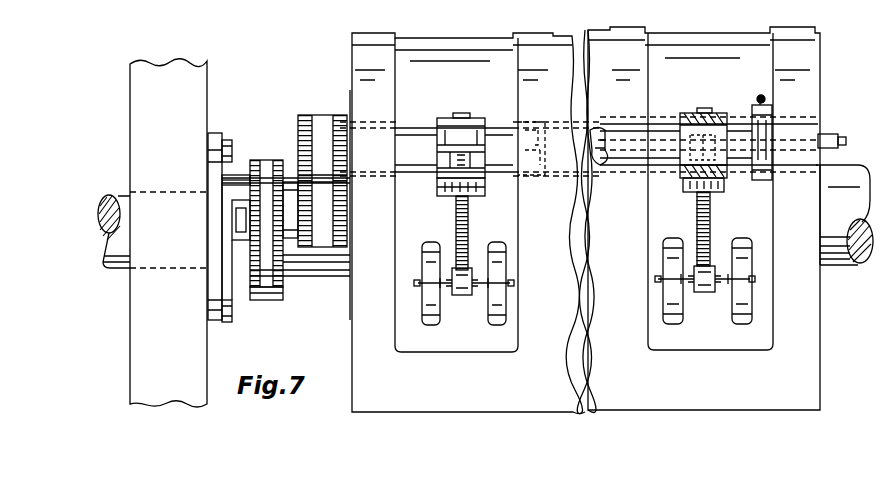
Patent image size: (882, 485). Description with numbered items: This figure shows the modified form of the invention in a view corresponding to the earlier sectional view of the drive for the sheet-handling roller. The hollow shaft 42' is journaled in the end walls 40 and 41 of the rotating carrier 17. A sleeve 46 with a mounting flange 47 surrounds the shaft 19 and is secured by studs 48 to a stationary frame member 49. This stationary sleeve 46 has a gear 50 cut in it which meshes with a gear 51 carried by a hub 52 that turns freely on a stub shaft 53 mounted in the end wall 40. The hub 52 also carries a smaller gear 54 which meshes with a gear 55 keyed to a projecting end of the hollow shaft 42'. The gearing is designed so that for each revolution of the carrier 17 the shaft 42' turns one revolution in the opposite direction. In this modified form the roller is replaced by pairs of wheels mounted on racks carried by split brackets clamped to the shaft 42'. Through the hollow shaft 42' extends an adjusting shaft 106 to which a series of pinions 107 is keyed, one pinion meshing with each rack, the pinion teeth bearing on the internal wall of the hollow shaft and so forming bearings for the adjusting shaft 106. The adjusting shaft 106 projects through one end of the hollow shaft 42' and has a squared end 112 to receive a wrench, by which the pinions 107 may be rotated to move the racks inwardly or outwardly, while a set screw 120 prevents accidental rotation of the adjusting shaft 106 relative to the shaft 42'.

The rotating carrier 17 is at (736, 30).
The shaft 19 is at (868, 160).
The end wall 40 is at (384, 22).
The end wall 41 is at (818, 38).
The hollow shaft 42' is at (446, 141).
The sleeve 46 is at (240, 175).
The mounting flange 47 is at (215, 133).
The studs 48 is at (230, 140).
The frame member 49 is at (134, 348).
The gear 50 is at (275, 300).
The gear 51 is at (268, 160).
The hub 52 is at (292, 240).
The stub shaft 53 is at (232, 218).
The smaller gear 54 is at (340, 276).
The gear 55 is at (332, 103).
The adjusting shaft 106 is at (598, 130).
The pinions 107 is at (690, 135).
The squared end 112 is at (840, 140).
The set screw 120 is at (764, 98).